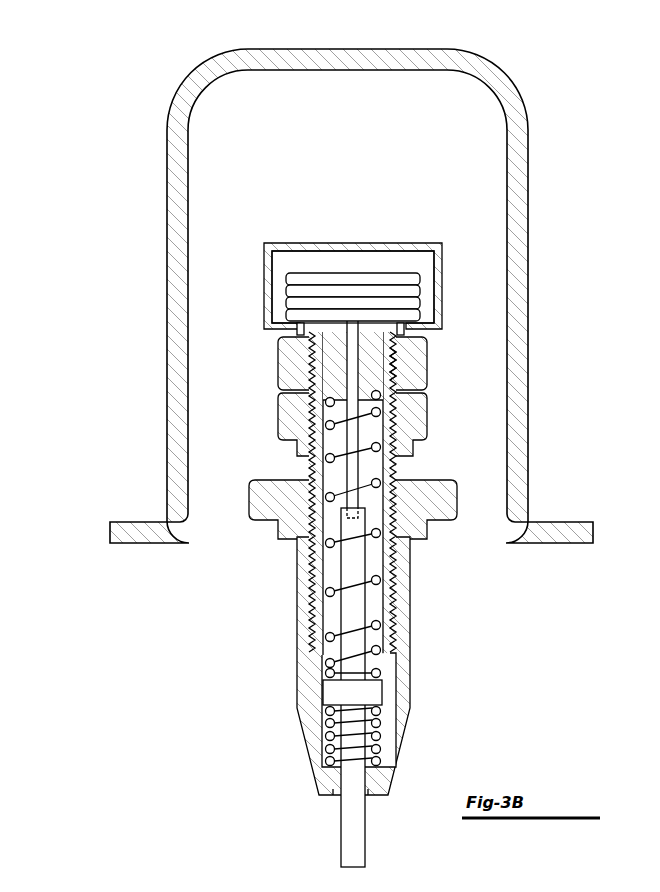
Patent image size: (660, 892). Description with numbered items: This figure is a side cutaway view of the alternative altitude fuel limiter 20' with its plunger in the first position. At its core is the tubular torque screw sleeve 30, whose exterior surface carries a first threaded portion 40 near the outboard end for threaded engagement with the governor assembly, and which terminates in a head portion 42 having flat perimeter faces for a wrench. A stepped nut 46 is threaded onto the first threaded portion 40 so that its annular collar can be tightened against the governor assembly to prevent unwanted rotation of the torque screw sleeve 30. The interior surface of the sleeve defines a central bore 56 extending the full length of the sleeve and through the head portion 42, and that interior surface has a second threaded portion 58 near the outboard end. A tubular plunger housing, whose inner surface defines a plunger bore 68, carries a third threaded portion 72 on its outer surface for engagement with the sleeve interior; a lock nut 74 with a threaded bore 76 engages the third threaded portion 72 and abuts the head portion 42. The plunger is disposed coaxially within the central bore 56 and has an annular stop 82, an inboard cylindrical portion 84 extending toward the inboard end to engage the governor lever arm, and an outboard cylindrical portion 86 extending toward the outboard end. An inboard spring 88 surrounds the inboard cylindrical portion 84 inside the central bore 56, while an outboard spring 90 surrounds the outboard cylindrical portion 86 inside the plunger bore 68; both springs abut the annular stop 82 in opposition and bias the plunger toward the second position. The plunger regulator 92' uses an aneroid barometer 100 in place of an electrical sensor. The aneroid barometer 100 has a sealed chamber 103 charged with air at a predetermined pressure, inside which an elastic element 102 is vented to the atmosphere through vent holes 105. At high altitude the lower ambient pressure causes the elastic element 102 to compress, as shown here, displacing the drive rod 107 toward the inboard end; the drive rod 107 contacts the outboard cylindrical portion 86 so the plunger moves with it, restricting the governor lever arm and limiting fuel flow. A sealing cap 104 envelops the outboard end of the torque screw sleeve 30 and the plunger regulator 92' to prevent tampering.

The altitude fuel limiter 20' is at (357, 458).
The sealing cap 104 is at (178, 173).
The plunger regulator 92' is at (349, 514).
The aneroid barometer 100 is at (302, 242).
The sealed chamber 103 is at (347, 258).
The elastic element 102 is at (415, 296).
The vent holes 105 is at (398, 333).
The threaded bore 76 is at (337, 348).
The lock nut 74 is at (278, 368).
The third threaded portion 72 is at (398, 372).
The head portion 42 is at (278, 422).
The plunger bore 68 is at (370, 430).
The second threaded portion 58 is at (318, 465).
The first threaded portion 40 is at (405, 468).
The stepped nut 46 is at (252, 498).
The drive rod 107 is at (360, 480).
The outboard cylindrical portion 86 is at (352, 583).
The outboard spring 90 is at (380, 580).
The torque screw sleeve 30 is at (297, 614).
The central bore 56 is at (320, 712).
The annular stop 82 is at (375, 690).
The inboard spring 88 is at (377, 735).
The inboard cylindrical portion 84 is at (352, 837).